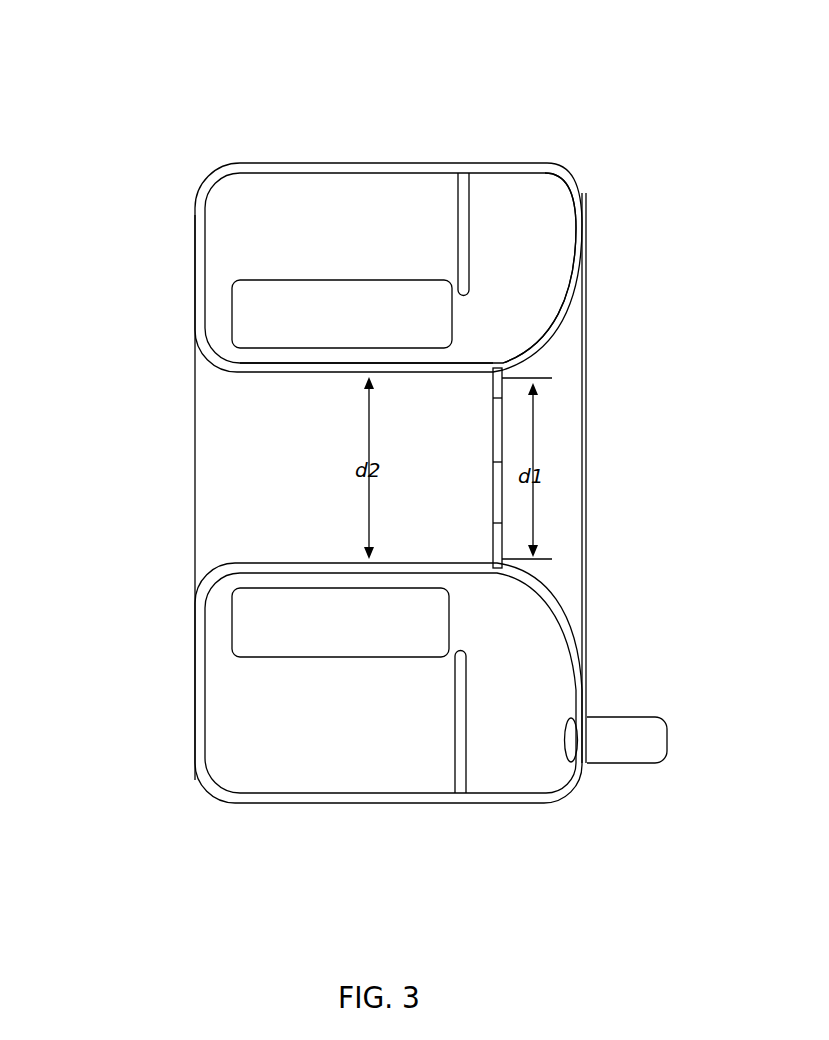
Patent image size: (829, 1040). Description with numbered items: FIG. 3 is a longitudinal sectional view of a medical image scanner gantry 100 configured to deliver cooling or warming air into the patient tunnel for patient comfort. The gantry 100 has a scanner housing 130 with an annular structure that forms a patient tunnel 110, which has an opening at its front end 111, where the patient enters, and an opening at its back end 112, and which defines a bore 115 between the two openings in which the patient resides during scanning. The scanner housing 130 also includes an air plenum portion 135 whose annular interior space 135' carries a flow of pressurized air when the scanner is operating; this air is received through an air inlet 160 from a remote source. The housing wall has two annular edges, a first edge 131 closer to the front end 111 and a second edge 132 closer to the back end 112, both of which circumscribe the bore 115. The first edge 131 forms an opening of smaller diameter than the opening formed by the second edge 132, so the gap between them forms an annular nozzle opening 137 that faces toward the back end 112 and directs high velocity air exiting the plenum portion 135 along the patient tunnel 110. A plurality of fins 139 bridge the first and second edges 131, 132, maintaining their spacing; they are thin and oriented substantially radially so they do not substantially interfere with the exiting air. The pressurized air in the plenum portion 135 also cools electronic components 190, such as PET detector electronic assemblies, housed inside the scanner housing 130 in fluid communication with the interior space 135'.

The medical image scanner gantry 100 is at (338, 88).
The patient tunnel 110 is at (290, 453).
The front end 111 is at (592, 503).
The back end 112 is at (186, 427).
The bore 115 is at (255, 502).
The scanner housing 130 is at (418, 163).
The first edge 131 is at (547, 364).
The second edge 132 is at (497, 368).
The air plenum portion 135 is at (432, 439).
The annular interior space 135' is at (594, 244).
The annular nozzle opening 137 is at (486, 435).
The fins 139 is at (493, 523).
The air inlet 160 is at (650, 732).
The electronic components 190 is at (245, 311).